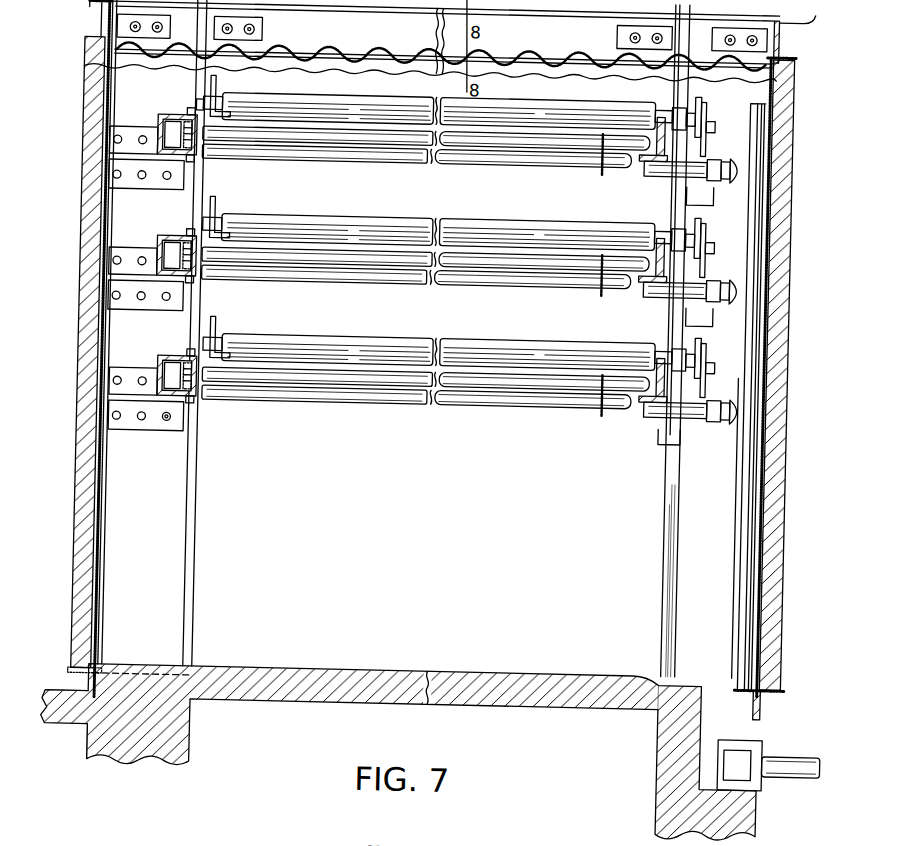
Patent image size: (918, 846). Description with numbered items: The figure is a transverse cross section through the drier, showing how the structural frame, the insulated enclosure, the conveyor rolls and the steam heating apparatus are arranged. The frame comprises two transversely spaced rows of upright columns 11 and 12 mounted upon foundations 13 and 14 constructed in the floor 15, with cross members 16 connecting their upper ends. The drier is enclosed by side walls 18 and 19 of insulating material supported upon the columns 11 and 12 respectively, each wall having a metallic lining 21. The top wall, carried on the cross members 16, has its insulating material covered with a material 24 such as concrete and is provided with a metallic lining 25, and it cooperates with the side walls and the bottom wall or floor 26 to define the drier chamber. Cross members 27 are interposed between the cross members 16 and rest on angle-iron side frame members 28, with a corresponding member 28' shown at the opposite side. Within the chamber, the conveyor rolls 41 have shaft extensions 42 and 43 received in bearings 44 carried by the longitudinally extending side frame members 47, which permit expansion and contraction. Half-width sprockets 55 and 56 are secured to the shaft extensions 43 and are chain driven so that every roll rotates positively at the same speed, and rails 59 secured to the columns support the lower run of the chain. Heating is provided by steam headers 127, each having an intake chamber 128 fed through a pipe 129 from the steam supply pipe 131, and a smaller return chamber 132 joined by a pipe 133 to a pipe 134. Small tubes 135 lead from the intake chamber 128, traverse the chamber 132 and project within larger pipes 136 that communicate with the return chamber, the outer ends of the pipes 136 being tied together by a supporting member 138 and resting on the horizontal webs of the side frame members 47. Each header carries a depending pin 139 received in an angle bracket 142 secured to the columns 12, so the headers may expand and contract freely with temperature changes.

The upright column 11 is at (667, 582).
The upright column 12 is at (186, 583).
The foundation 13 is at (686, 782).
The foundation 14 is at (188, 752).
The floor 15 is at (62, 722).
The cross member 16 is at (347, 70).
The side wall 18 is at (786, 511).
The side wall 19 is at (80, 503).
The lining 21 is at (101, 535).
The covering material 24 is at (288, 835).
The metallic lining 25 is at (546, 70).
The bottom wall or floor 26 is at (306, 664).
The cross member 27 is at (141, 59).
The side frame member 28 is at (805, 39).
The front top flange 28' is at (73, 18).
The roll 41 is at (363, 341).
The shaft extension 42 is at (197, 110).
The shaft extension 43 is at (676, 345).
The bearing 44 is at (213, 94).
The side frame member 47 is at (216, 330).
The sprocket 55 is at (702, 347).
The sprocket 56 is at (707, 381).
The rail 59 is at (668, 442).
The steam header 127 is at (158, 375).
The intake chamber 128 is at (170, 380).
The pipe 129 is at (633, 292).
The steam supply pipe 131 is at (750, 195).
The steam return chamber 132 is at (197, 406).
The pipe 133 is at (444, 407).
The pipe 134 is at (746, 472).
The small tube 135 is at (191, 355).
The pipe 136 is at (559, 388).
The supporting member 138 is at (604, 411).
The depending pin 139 is at (170, 428).
The angle bracket 142 is at (136, 410).